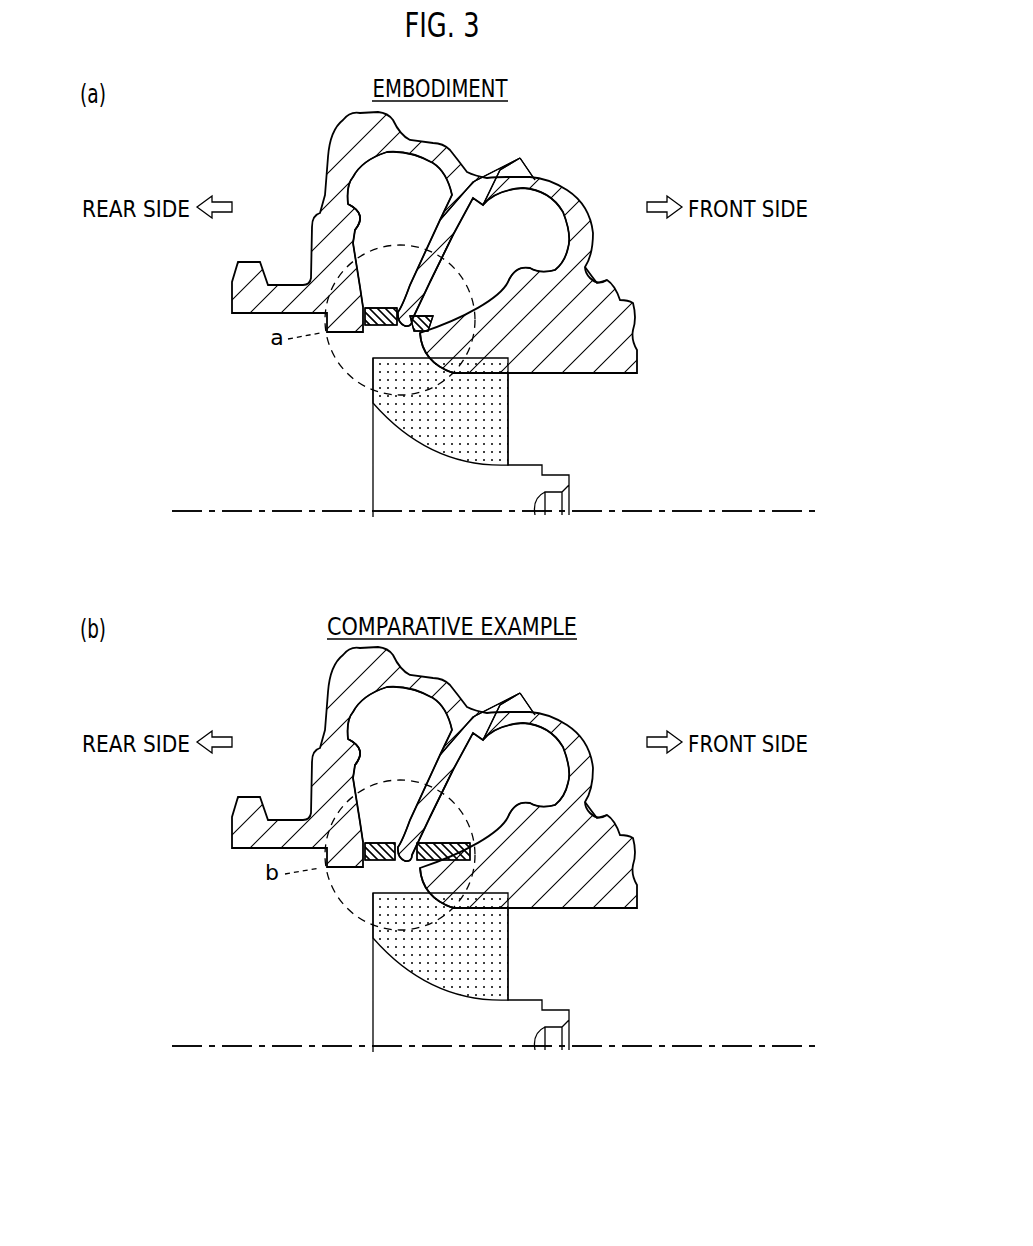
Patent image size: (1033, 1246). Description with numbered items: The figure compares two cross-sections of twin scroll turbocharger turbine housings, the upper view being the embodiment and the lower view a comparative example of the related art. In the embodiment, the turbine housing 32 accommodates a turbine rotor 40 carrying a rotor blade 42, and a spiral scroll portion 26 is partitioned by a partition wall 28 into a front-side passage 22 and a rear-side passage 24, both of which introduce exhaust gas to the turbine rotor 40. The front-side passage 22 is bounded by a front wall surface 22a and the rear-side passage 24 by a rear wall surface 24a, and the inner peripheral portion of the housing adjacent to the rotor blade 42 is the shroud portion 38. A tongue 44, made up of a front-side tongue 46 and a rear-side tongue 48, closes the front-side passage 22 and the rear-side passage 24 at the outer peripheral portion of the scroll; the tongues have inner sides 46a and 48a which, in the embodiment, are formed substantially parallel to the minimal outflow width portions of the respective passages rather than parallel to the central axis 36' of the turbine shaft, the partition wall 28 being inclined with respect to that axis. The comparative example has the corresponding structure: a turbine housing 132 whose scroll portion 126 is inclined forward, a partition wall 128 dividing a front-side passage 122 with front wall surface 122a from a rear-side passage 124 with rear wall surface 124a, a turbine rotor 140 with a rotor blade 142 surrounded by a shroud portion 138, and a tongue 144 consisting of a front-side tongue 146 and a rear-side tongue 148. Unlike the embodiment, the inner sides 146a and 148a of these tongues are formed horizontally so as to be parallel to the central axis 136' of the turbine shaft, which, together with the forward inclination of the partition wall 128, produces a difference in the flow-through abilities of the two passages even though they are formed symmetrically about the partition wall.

The front-side passage 22 is at (499, 249).
The front wall surface 22a is at (586, 276).
The rear-side passage 24 is at (383, 223).
The rear wall surface 24a is at (346, 209).
The scroll portion 26 is at (437, 201).
The partition wall 28 is at (452, 252).
The turbine housing 32 is at (589, 186).
The central axis of turbine shaft 36' is at (496, 477).
The shroud portion 38 is at (531, 364).
The turbine rotor 40 is at (479, 500).
The rotor blade 42 is at (493, 412).
The tongue 44 is at (352, 392).
The front-side tongue 46 is at (408, 335).
The inner side of front-side tongue 46a is at (429, 316).
The rear-side tongue 48 is at (381, 327).
The inner side of rear-side tongue 48a is at (377, 307).
The front-side passage 122 is at (518, 778).
The front wall surface 122a is at (574, 812).
The rear-side passage 124 is at (383, 758).
The rear wall surface 124a is at (346, 744).
The scroll portion 126 is at (437, 736).
The partition wall 128 is at (450, 773).
The turbine housing 132 is at (589, 721).
The central axis of turbine shaft 136' is at (496, 1011).
The shroud portion 138 is at (530, 897).
The turbine rotor 140 is at (479, 1037).
The rotor blade 142 is at (495, 948).
The tongue 144 is at (352, 927).
The front-side tongue 146 is at (418, 866).
The inner side of front-side tongue 146a is at (452, 843).
The rear-side tongue 148 is at (381, 862).
The inner side of rear-side tongue 148a is at (377, 842).